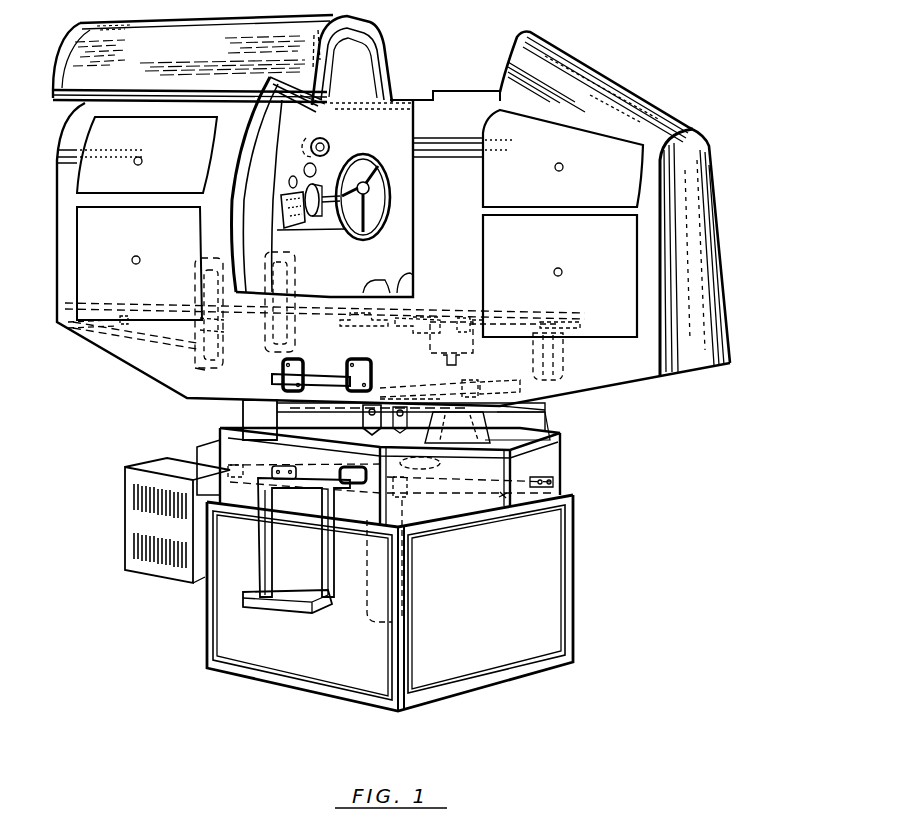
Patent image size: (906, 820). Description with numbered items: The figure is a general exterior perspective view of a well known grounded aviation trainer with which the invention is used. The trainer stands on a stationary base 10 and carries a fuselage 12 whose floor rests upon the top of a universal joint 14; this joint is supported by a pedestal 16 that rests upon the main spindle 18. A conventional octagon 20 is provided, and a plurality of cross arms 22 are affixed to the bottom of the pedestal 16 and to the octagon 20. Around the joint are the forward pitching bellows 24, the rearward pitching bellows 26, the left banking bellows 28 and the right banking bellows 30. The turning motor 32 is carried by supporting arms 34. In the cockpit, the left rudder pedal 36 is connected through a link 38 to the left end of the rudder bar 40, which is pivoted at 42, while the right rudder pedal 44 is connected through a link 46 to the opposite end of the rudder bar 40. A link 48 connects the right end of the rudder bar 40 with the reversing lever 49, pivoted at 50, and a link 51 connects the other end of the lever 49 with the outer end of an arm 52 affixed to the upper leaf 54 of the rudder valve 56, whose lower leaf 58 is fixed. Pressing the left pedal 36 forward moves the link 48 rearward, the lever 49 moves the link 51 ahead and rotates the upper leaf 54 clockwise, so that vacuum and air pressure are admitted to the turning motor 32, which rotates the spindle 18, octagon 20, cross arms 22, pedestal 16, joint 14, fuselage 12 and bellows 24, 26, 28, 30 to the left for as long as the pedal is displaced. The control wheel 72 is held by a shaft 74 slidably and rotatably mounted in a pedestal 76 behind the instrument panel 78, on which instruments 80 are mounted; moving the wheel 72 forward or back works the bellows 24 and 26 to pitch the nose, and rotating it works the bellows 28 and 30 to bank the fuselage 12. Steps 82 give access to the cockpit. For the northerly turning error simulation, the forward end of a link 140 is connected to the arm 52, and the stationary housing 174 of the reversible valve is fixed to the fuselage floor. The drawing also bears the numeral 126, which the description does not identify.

The stationary base 10 is at (550, 630).
The fuselage 12 is at (640, 375).
The universal joint 14 is at (390, 385).
The pedestal 16 is at (368, 432).
The main spindle 18 is at (366, 618).
The octagon 20 is at (563, 455).
The cross arms 22 is at (467, 465).
The forward pitching bellows 24 is at (240, 412).
The rearward pitching bellows 26 is at (537, 413).
The left banking bellows 28 is at (282, 398).
The right banking bellows 30 is at (488, 389).
The turning motor 32 is at (152, 570).
The arms 34 is at (197, 480).
The left rudder pedal 36 is at (214, 366).
The link 38 is at (150, 340).
The rudder bar 40 is at (90, 318).
The pivot 42 is at (130, 312).
The right rudder pedal 44 is at (292, 280).
The link 46 is at (230, 322).
The link 48 is at (252, 288).
The reversing lever 49 is at (342, 328).
The pivot 50 is at (378, 330).
The link 51 is at (413, 316).
The arm 52 is at (462, 316).
The upper leaf 54 is at (475, 338).
The rudder valve 56 is at (482, 320).
The lower leaf 58 is at (470, 357).
The control wheel 72 is at (386, 232).
The shaft 74 is at (328, 205).
The pedestal 76 is at (283, 207).
The instrument panel 78 is at (316, 122).
The instruments 80 is at (292, 167).
The steps 82 is at (312, 482).
The gauge 126 is at (340, 150).
The link 140 is at (520, 316).
The stationary housing 174 is at (576, 330).